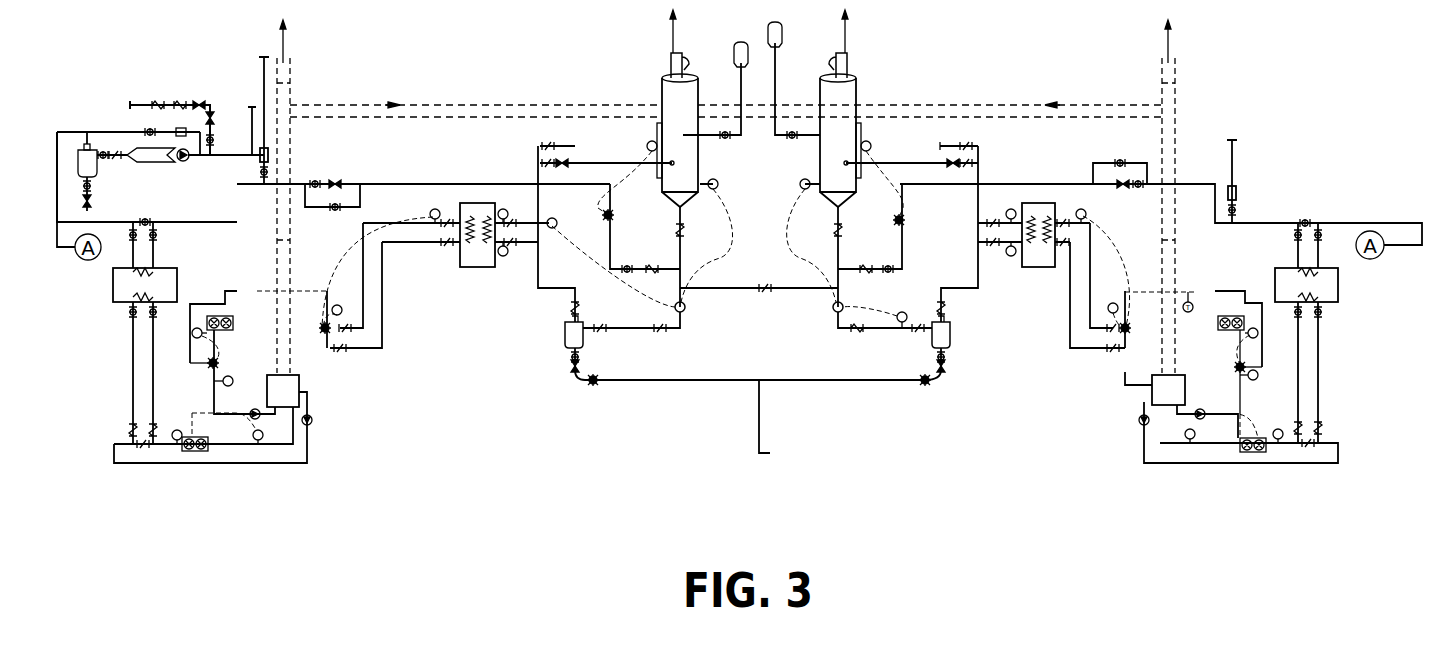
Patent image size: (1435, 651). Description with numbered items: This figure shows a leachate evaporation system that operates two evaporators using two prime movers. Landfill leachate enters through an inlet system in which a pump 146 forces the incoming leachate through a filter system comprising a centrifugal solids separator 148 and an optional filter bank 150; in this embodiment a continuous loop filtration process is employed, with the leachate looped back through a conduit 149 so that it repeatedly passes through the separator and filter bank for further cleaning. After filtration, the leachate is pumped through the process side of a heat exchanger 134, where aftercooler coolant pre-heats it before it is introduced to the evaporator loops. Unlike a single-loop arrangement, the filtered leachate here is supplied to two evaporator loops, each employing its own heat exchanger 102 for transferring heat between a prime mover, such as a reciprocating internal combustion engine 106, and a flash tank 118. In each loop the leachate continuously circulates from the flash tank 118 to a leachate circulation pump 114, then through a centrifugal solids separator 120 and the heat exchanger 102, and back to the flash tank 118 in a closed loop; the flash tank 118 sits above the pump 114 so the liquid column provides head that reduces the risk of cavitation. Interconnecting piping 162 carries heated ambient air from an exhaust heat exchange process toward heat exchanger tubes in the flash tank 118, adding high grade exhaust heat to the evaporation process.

The heat exchanger 102 is at (481, 268).
The reciprocating internal combustion engine 106 is at (300, 392).
The leachate circulation pump 114 is at (834, 310).
The flash tank 118 is at (662, 88).
The centrifugal solids separator 120 is at (565, 338).
The heat exchanger 134 is at (112, 283).
The pump 146 is at (186, 161).
The centrifugal solids separator 148 is at (98, 162).
The conduit 149 is at (95, 131).
The filter bank 150 is at (176, 130).
The interconnecting piping 162 is at (447, 103).